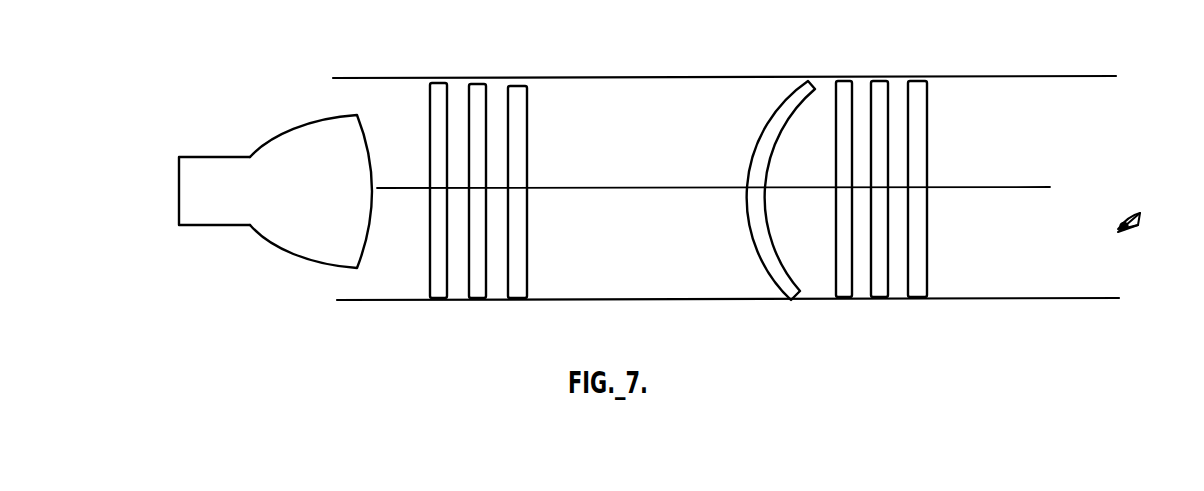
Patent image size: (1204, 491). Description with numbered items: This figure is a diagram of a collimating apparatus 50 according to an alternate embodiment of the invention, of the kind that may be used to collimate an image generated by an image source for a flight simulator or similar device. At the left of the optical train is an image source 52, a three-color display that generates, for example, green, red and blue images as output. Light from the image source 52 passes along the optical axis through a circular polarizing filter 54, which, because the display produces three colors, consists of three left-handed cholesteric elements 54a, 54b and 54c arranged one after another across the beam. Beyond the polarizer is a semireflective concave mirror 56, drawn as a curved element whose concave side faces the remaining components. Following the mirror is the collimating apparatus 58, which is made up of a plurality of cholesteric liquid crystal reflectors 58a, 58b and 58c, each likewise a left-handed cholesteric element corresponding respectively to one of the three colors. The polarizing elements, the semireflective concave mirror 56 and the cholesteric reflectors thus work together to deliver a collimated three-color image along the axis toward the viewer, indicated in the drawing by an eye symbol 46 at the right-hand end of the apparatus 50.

The observer's eye 46 is at (1134, 213).
The apparatus 50 is at (660, 55).
The image source 52 is at (210, 228).
The circular polarizing filter 54 is at (500, 189).
The left-handed cholesteric element 54a is at (440, 300).
The left-handed cholesteric element 54b is at (478, 300).
The left-handed cholesteric element 54c is at (524, 300).
The semireflective concave mirror 56 is at (812, 78).
The collimating apparatus 58 is at (909, 197).
The cholesteric liquid crystal reflector 58a is at (841, 80).
The cholesteric liquid crystal reflector 58b is at (880, 81).
The cholesteric liquid crystal reflector 58c is at (925, 80).